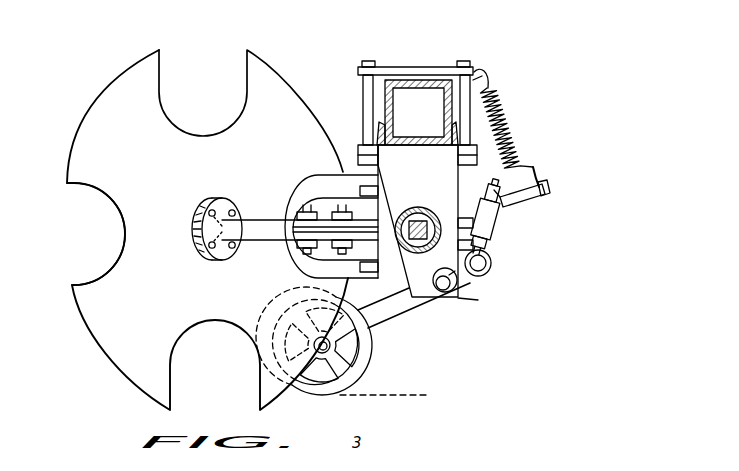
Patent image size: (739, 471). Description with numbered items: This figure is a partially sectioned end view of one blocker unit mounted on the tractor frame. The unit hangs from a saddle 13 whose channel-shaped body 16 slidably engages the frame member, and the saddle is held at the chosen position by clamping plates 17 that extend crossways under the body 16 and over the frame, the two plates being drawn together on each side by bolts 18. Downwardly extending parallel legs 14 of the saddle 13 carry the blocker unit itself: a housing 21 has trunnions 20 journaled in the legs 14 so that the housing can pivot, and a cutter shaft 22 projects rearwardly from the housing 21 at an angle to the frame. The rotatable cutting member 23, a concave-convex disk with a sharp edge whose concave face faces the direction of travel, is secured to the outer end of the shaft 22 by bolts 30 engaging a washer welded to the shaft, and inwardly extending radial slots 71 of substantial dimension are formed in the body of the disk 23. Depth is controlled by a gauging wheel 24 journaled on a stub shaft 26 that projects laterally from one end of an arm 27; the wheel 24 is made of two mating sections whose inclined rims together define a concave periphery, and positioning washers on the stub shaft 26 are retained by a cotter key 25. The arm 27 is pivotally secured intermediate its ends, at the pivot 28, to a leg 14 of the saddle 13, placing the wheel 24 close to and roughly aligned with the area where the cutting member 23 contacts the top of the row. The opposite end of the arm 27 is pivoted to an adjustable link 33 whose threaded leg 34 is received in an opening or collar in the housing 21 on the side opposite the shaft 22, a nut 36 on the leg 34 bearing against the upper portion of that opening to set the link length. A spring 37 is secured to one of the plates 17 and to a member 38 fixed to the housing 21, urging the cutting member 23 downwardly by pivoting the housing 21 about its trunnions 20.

The saddle 13 is at (343, 172).
The legs 14 is at (441, 174).
The channel-shaped body 16 is at (447, 110).
The clamping plates 17 is at (387, 67).
The bolts 18 is at (358, 78).
The trunnions 20 is at (426, 208).
The housing 21 is at (313, 212).
The cutter shaft 22 is at (252, 207).
The cutting member 23 is at (123, 338).
The gauging wheel 24 is at (371, 358).
The cotter key 25 is at (240, 248).
The stub shaft 26 is at (312, 392).
The arm 27 is at (393, 318).
The pivot 28 is at (455, 298).
The bolts 30 is at (197, 243).
The adjustable link 33 is at (496, 232).
The threaded leg 34 is at (540, 187).
The nut 36 is at (504, 206).
The spring 37 is at (512, 113).
The member 38 is at (543, 196).
The radial slots 71 is at (92, 222).